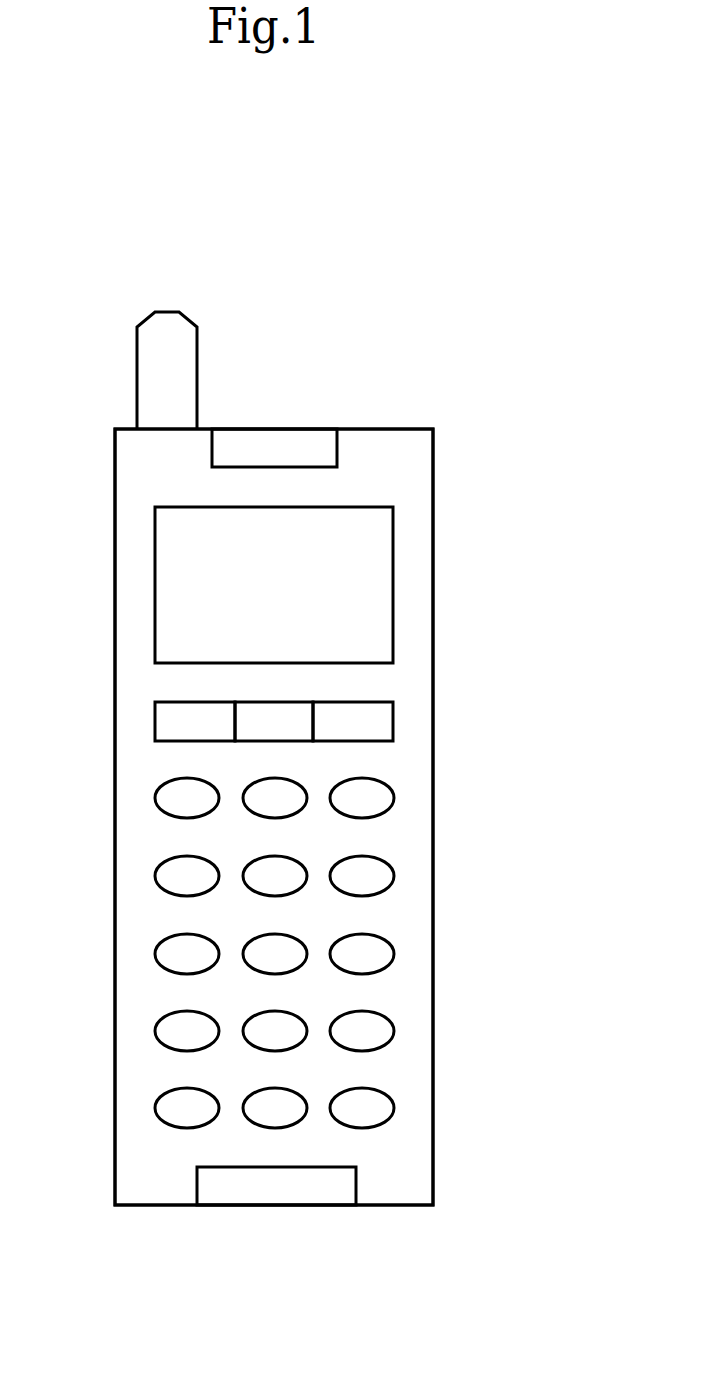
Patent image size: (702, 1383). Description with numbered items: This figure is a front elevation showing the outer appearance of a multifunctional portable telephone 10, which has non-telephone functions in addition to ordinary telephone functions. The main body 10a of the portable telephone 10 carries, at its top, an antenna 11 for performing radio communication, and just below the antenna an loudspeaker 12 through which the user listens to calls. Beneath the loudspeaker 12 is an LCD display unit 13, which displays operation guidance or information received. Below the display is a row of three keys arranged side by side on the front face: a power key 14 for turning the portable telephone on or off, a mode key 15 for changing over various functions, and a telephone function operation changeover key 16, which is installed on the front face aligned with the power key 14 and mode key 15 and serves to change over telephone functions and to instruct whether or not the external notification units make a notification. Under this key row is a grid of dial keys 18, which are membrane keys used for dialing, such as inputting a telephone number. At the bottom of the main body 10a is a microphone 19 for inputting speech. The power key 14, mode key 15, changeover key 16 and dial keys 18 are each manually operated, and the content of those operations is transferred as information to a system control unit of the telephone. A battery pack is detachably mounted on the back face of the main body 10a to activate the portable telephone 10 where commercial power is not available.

The multifunctional portable telephone 10 is at (511, 385).
The main body 10a is at (434, 467).
The antenna 11 is at (165, 317).
The loudspeaker 12 is at (277, 443).
The LCD display unit 13 is at (166, 585).
The power key 14 is at (165, 722).
The mode key 15 is at (272, 730).
The telephone function operation changeover key 16 is at (381, 720).
The dial keys 18 is at (392, 950).
The microphone 19 is at (272, 1195).